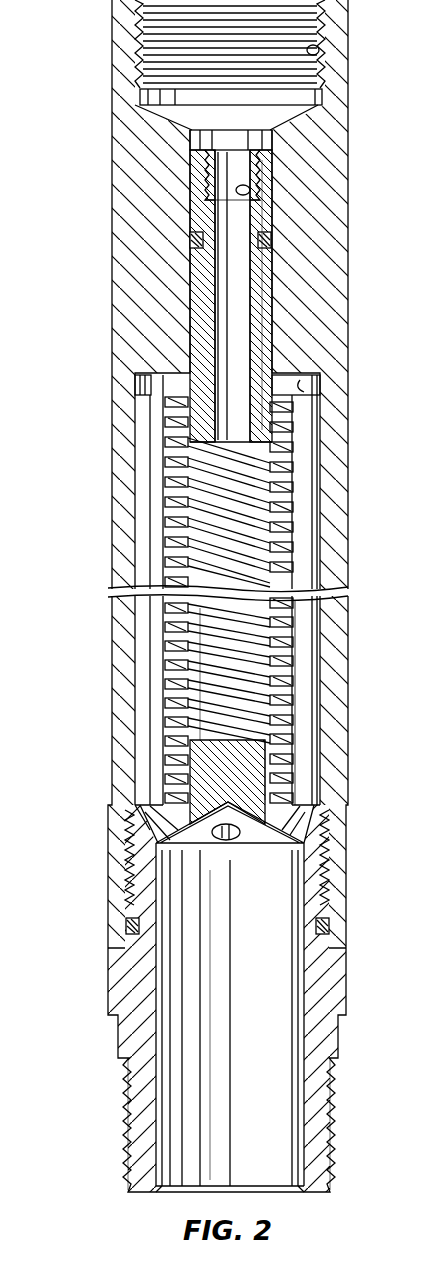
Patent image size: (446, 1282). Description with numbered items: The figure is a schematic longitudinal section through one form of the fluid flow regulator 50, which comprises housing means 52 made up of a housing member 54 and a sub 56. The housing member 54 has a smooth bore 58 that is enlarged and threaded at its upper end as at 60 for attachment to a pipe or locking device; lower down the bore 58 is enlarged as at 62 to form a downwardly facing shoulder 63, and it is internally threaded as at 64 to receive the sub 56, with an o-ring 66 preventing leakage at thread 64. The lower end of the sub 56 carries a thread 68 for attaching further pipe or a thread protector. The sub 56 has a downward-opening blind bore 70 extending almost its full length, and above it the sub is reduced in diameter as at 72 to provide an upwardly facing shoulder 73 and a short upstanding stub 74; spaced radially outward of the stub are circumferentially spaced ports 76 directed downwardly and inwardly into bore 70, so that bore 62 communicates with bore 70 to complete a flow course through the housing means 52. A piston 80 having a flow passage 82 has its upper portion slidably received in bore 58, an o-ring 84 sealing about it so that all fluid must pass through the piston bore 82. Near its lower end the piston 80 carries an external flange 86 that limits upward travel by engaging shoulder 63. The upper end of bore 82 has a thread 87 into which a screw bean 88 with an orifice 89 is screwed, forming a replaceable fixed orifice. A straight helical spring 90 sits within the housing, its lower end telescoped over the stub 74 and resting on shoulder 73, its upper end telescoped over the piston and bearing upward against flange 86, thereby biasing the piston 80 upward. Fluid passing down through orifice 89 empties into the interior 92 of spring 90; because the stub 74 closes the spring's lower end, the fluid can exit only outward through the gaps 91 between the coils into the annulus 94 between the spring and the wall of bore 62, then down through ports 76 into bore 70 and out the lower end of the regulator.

The fluid flow regulator 50 is at (86, 160).
The housing means 52 is at (350, 247).
The housing member 54 is at (338, 286).
The sub 56 is at (335, 981).
The smooth bore 58 is at (262, 326).
The threaded upper end 60 is at (316, 50).
The enlarged bore 62 is at (314, 464).
The downwardly facing shoulder 63 is at (302, 393).
The internal thread 64 is at (328, 862).
The o-ring 66 is at (330, 930).
The lower thread 68 is at (330, 1122).
The blind bore 70 is at (290, 1050).
The reduced diameter portion 72 is at (290, 780).
The upwardly facing shoulder 73 is at (160, 798).
The stub 74 is at (200, 768).
The flow ports 76 is at (306, 797).
The piston 80 is at (195, 292).
The piston flow passage 82 is at (226, 305).
The o-ring 84 is at (196, 240).
The external flange 86 is at (143, 393).
The thread 87 is at (213, 178).
The screw bean 88 is at (262, 168).
The orifice 89 is at (260, 196).
The helical spring 90 is at (306, 536).
The gaps between coils 91 is at (291, 522).
The spring interior 92 is at (290, 571).
The annulus 94 is at (306, 636).